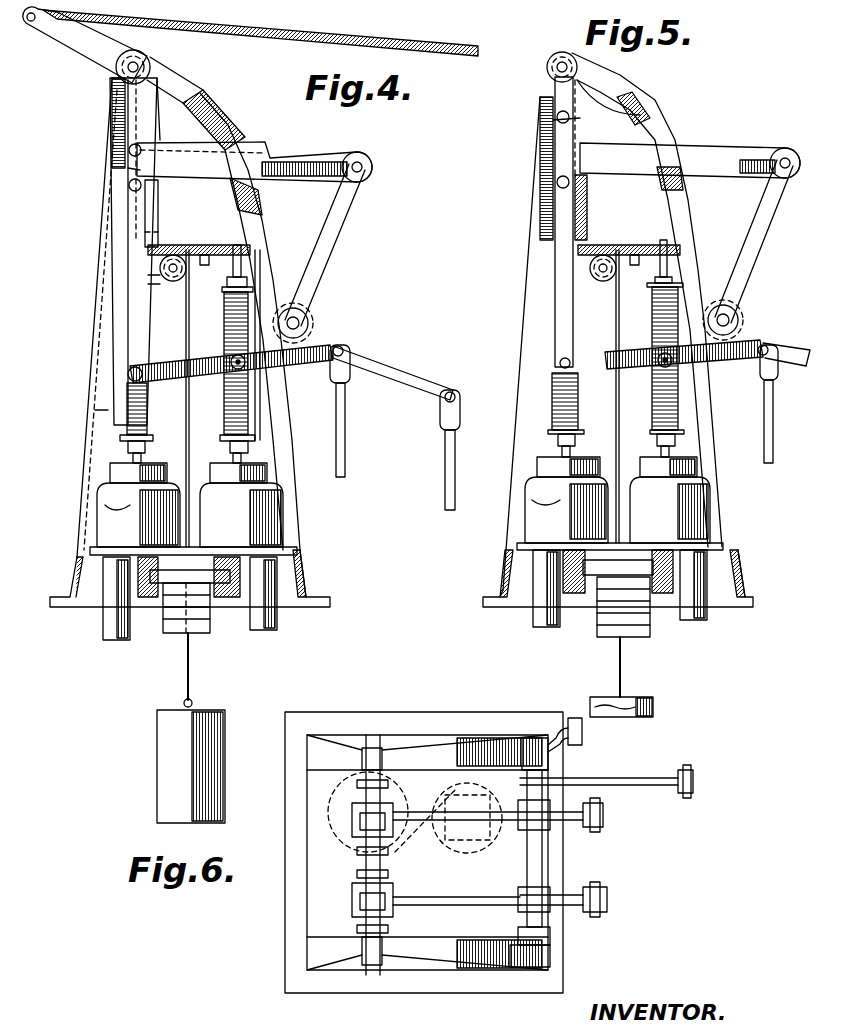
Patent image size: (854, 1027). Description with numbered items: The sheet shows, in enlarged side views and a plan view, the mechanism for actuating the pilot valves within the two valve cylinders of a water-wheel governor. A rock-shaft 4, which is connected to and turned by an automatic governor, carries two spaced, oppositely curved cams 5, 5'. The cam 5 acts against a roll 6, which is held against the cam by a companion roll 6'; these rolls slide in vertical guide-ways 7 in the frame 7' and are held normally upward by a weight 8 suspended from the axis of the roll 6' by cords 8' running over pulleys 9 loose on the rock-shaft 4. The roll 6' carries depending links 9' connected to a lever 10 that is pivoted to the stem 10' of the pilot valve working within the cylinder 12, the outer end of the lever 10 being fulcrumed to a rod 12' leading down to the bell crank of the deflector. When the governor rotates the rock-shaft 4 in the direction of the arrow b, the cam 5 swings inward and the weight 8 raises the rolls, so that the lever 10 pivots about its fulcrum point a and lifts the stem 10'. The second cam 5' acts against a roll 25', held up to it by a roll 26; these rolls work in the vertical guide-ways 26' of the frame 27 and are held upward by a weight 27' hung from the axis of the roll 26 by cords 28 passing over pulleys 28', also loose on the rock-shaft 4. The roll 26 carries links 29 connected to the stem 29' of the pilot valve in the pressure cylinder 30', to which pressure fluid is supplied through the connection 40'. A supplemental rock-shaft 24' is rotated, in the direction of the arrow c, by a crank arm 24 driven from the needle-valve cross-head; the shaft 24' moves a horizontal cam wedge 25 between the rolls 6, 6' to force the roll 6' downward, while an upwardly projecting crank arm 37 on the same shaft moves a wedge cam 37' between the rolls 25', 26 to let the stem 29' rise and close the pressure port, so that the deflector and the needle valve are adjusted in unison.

In FIG. 4, the rock-shaft 4 is at (140, 67).
In FIG. 5, the rock-shaft 4 is at (548, 67).
In FIG. 6, the rock-shaft 4 is at (357, 874).
In FIG. 4, the cam 5 is at (140, 98).
In FIG. 4, the cam 5' is at (241, 308).
In FIG. 5, the cam 5' is at (624, 97).
In FIG. 4, the roll 6 is at (96, 159).
In FIG. 6, the roll 6 is at (392, 904).
In FIG. 4, the roll 6' is at (96, 194).
In FIG. 4, the vertical guide-ways 7 is at (176, 213).
In FIG. 4, the frame 7' is at (95, 178).
In FIG. 4, the weight 8 is at (205, 761).
In FIG. 4, the cords 8' is at (201, 666).
In FIG. 4, the pulleys 9 is at (97, 310).
In FIG. 6, the pulleys 9 is at (358, 925).
In FIG. 4, the depending links 9' is at (114, 251).
In FIG. 4, the lever 10 is at (173, 419).
In FIG. 5, the lever 10 is at (703, 372).
In FIG. 6, the lever 10 is at (585, 735).
In FIG. 4, the stem 10' is at (276, 354).
In FIG. 5, the stem 10' is at (653, 348).
In FIG. 4, the cylinder 12 is at (241, 505).
In FIG. 5, the cylinder 12 is at (721, 444).
In FIG. 4, the rod 12' is at (361, 411).
In FIG. 6, the rod 12' is at (646, 721).
In FIG. 4, the crank arm 24 is at (285, 361).
In FIG. 5, the crank arm 24 is at (709, 369).
In FIG. 6, the crank arm 24 is at (606, 780).
In FIG. 4, the supplemental rock-shaft 24' is at (323, 320).
In FIG. 5, the supplemental rock-shaft 24' is at (750, 318).
In FIG. 6, the supplemental rock-shaft 24' is at (559, 852).
In FIG. 4, the cam wedge 25 is at (254, 162).
In FIG. 6, the cam wedge 25 is at (456, 890).
In FIG. 5, the roll 25' is at (590, 123).
In FIG. 6, the roll 25' is at (383, 812).
In FIG. 5, the roll 26 is at (527, 191).
In FIG. 5, the vertical guide-ways 26' is at (540, 207).
In FIG. 5, the frame 27 is at (520, 343).
In FIG. 5, the weight 27' is at (639, 702).
In FIG. 5, the cords 28 is at (639, 667).
In FIG. 6, the cords 28 is at (352, 847).
In FIG. 5, the pulleys 28' is at (647, 300).
In FIG. 5, the links 29 is at (534, 222).
In FIG. 5, the stem 29' is at (537, 407).
In FIG. 4, the cylinder 30' is at (107, 505).
In FIG. 5, the cylinder 30' is at (543, 500).
In FIG. 5, the crank arm 37 is at (761, 235).
In FIG. 6, the crank arm 37 is at (523, 819).
In FIG. 5, the wedge cam 37' is at (690, 155).
In FIG. 4, the connection 40' is at (164, 598).
In FIG. 5, the connection 40' is at (597, 591).
In FIG. 4, the fulcrum point a is at (112, 39).
In FIG. 5, the fulcrum point a is at (770, 341).
In FIG. 4, the arrow b is at (50, 58).
In FIG. 4, the arrow c is at (346, 280).